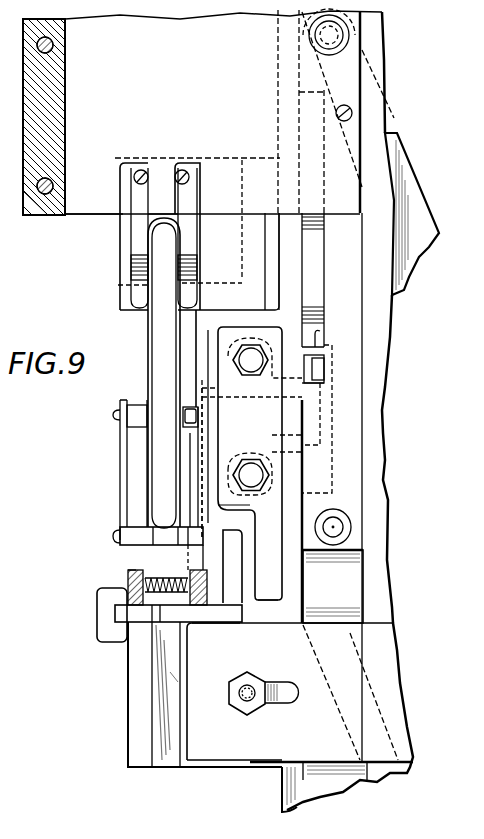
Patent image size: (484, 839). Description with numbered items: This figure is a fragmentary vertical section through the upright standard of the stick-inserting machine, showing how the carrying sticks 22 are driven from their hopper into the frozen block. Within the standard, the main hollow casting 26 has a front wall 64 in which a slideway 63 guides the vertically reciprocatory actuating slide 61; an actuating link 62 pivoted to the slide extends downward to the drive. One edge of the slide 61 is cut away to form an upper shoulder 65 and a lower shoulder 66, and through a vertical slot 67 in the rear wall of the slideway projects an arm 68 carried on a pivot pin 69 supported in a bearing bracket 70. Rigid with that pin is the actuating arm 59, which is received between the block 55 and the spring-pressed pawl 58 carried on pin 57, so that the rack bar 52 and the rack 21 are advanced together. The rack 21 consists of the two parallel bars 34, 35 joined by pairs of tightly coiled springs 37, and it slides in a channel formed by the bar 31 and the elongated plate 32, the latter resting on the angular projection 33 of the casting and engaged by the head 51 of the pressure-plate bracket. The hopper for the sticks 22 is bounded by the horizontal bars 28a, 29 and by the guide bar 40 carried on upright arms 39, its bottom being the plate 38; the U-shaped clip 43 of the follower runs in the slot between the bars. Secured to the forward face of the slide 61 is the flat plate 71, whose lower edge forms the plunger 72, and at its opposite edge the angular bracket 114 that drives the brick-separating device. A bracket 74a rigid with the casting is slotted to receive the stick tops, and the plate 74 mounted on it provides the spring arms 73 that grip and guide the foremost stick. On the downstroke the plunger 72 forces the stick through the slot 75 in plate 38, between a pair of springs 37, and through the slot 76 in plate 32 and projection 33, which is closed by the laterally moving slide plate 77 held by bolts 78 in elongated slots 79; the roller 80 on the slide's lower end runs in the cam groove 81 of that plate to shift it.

The angular bracket 114 is at (58, 97).
The flat plate 71 is at (80, 214).
The upper shoulder 65 is at (319, 92).
The actuating link 62 is at (414, 187).
The actuating slide 61 is at (352, 342).
The front wall 64 is at (383, 573).
The plate 74 is at (190, 183).
The plunger 72 is at (152, 204).
The spring arms 73 is at (135, 296).
The bracket 74a is at (119, 270).
The carrying sticks 22 is at (158, 322).
The horizontal bar 28a is at (190, 357).
The horizontal bar 29 is at (190, 470).
The U-shaped clip 43 is at (195, 433).
The guide bar 40 is at (146, 400).
The upright arms 39 is at (123, 500).
The plate 38 is at (133, 537).
The slot 75 is at (160, 545).
The pin 57 is at (188, 547).
The spring-pressed pawl 58 is at (193, 565).
The bar 34 is at (128, 585).
The rack 21 is at (122, 571).
The elongated plate 32 is at (120, 612).
The coiled springs 37 is at (164, 614).
The head 51 is at (97, 633).
The angular projection 33 is at (137, 715).
The slot 76 is at (165, 662).
The slide plate 77 is at (225, 752).
The bar 35 is at (197, 625).
The bolts 78 is at (255, 684).
The elongated slots 79 is at (284, 690).
The hollow casting 26 is at (279, 793).
The slideway 63 is at (363, 584).
The cam groove 81 is at (352, 637).
The roller 80 is at (334, 512).
The pivot pin 69 is at (276, 396).
The bearing bracket 70 is at (257, 490).
The actuating arm 59 is at (226, 519).
The block 55 is at (232, 552).
The rack bar 52 is at (232, 572).
The horizontal bar 31 is at (265, 601).
The vertical slot 67 is at (316, 345).
The arm 68 is at (323, 368).
The lower shoulder 66 is at (318, 382).